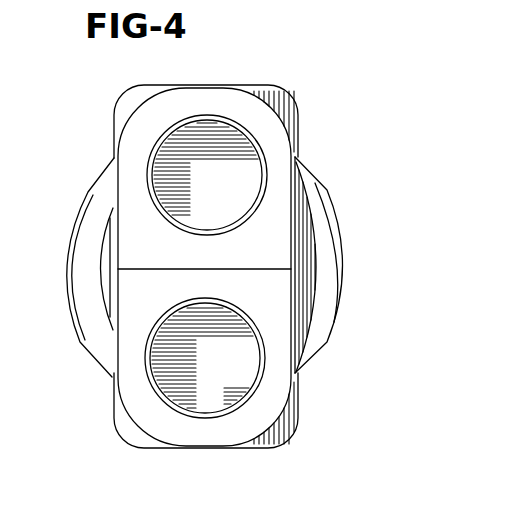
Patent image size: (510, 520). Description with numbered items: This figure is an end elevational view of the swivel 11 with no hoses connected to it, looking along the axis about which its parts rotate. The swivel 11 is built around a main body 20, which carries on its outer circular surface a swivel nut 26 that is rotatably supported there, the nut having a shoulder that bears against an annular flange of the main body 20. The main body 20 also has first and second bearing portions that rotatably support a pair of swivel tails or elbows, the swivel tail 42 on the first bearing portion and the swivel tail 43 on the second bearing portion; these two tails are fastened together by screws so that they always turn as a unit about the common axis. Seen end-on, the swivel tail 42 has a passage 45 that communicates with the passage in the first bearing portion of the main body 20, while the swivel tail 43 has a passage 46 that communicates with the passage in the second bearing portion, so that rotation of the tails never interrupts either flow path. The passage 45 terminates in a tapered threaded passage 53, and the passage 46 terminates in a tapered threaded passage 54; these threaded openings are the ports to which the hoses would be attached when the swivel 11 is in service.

The swivel 11 is at (97, 99).
The main body 20 is at (94, 180).
The swivel nut 26 is at (70, 230).
The swivel tail 42 is at (253, 452).
The swivel tail 43 is at (259, 90).
The passage 45 is at (195, 407).
The passage 46 is at (203, 128).
The tapered threaded passage 53 is at (267, 372).
The tapered threaded passage 54 is at (267, 155).